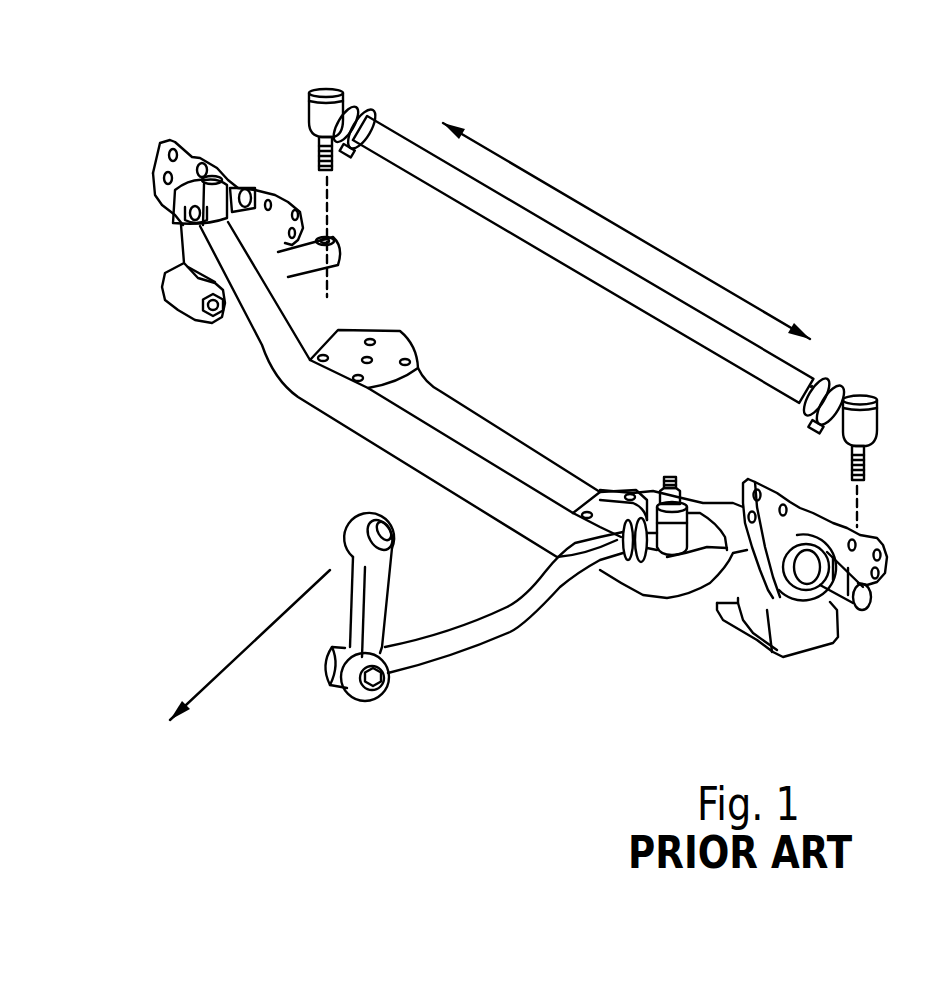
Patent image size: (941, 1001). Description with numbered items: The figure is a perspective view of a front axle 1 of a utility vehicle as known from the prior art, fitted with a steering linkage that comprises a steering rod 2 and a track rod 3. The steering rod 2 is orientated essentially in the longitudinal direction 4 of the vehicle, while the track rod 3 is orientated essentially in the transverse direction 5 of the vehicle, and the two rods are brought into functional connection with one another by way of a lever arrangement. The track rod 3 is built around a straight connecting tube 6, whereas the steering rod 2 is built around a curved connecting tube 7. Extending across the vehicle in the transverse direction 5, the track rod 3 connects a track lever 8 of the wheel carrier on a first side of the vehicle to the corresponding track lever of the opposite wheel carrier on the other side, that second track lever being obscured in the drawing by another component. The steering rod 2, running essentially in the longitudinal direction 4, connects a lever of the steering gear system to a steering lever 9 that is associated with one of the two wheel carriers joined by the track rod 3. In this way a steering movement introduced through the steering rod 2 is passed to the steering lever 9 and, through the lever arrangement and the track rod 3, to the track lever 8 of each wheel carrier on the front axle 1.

The front axle 1 is at (273, 388).
The steering rod 2 is at (449, 664).
The track rod 3 is at (405, 133).
The longitudinal direction 4 is at (241, 652).
The transverse direction 5 is at (613, 221).
The straight connecting tube 6 is at (803, 380).
The curved connecting tube 7 is at (535, 601).
The track lever 8 is at (299, 247).
The steering lever 9 is at (708, 508).